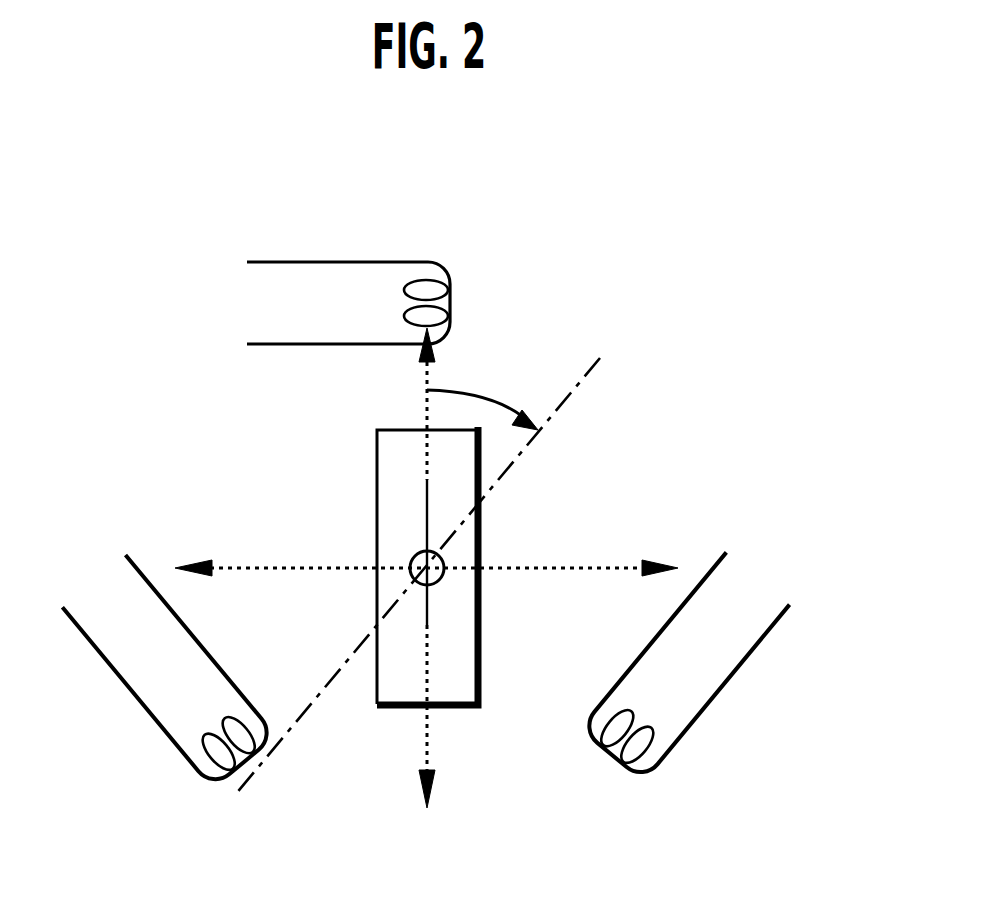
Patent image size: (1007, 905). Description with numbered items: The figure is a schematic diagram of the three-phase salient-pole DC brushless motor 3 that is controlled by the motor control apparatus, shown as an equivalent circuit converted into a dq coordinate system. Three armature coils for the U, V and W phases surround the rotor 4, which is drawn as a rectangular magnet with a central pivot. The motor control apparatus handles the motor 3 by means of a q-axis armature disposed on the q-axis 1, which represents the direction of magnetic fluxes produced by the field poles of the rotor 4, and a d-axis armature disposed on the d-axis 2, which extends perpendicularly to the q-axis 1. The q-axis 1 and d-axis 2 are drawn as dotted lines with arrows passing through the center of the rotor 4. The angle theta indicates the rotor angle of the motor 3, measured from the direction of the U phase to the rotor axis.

The q-axis 1 is at (427, 740).
The d-axis 2 is at (540, 568).
The motor 3 is at (683, 363).
The rotor 4 is at (376, 470).